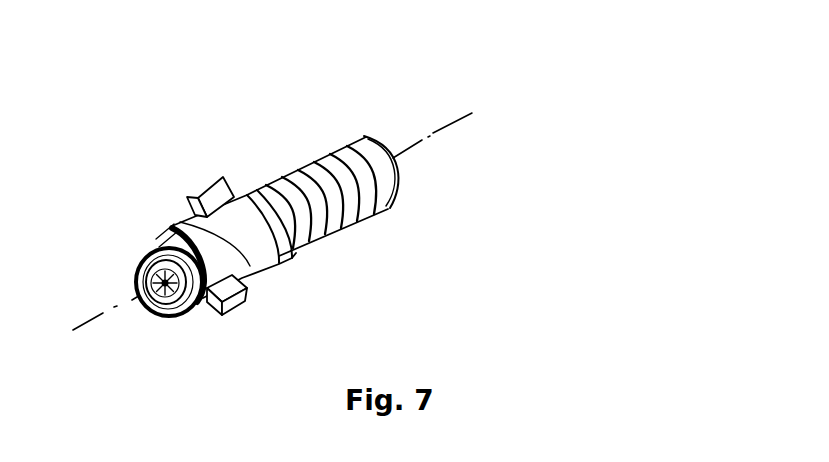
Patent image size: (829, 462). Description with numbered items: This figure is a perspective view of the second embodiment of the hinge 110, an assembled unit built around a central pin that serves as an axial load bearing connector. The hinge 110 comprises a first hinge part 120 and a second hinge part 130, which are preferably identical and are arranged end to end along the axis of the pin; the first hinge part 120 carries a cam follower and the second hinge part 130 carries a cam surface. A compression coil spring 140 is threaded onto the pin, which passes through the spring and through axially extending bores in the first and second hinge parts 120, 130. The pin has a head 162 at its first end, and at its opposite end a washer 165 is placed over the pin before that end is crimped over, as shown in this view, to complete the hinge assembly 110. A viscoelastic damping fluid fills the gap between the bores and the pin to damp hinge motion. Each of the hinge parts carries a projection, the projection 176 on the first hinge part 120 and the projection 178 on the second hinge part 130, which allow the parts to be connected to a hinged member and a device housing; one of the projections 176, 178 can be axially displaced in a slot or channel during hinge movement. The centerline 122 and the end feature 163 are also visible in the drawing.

The hinge 110 is at (289, 149).
The first hinge part 120 is at (263, 266).
The longitudinal axis 122 is at (427, 138).
The second hinge part 130 is at (172, 226).
The compression coil spring 140 is at (338, 231).
The head 162 is at (381, 141).
The screen 163 is at (163, 303).
The washer 165 is at (112, 247).
The projection 176 is at (215, 180).
The projection 178 is at (240, 306).